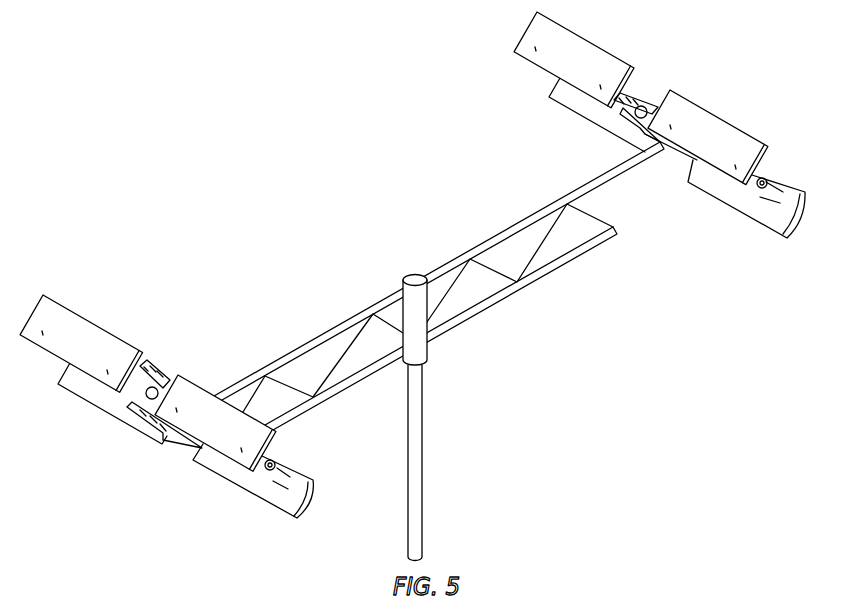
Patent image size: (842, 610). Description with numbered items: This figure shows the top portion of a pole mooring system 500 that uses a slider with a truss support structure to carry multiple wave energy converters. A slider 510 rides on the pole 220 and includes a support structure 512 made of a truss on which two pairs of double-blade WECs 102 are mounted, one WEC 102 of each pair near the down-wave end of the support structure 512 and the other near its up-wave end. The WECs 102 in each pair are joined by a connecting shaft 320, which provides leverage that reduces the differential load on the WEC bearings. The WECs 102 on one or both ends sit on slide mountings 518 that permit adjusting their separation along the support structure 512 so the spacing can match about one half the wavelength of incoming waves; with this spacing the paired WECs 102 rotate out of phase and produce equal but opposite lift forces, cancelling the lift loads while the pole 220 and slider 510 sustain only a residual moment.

The mooring system 500 is at (251, 98).
The WEC 102 is at (78, 278).
The support structure 512 is at (317, 340).
The slider 510 is at (420, 344).
The pole 220 is at (417, 488).
The connecting shaft 320 is at (160, 397).
The slide mounting 518 is at (136, 419).